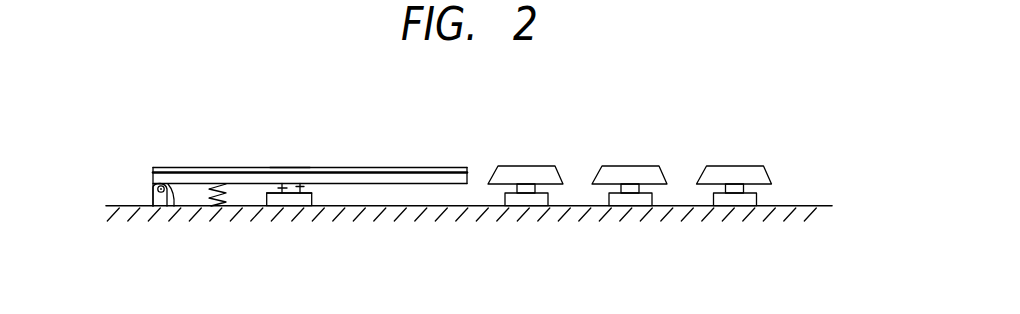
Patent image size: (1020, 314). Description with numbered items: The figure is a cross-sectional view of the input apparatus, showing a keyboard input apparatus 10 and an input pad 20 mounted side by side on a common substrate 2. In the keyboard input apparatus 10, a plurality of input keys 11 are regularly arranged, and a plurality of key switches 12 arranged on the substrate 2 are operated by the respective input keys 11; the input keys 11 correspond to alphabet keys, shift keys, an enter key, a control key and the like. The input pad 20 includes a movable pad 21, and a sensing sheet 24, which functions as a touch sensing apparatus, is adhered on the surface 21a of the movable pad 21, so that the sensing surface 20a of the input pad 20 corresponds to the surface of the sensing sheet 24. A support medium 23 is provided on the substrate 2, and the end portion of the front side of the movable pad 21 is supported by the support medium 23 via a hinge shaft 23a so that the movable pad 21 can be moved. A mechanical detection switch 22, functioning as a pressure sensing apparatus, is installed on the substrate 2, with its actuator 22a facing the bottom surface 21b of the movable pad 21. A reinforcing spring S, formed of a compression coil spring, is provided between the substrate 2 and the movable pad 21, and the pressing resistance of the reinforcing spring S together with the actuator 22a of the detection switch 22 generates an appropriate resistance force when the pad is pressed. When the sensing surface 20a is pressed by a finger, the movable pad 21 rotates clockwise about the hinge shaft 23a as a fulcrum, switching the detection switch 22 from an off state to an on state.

The substrate 2 is at (807, 205).
The keyboard input apparatus 10 is at (493, 101).
The input key 11 is at (540, 169).
The key switch 12 is at (523, 202).
The input pad 20 is at (189, 157).
The sensing surface 20a is at (375, 174).
The movable pad 21 is at (310, 186).
The surface of the movable pad 21a is at (452, 167).
The bottom surface of the movable pad 21b is at (405, 184).
The mechanical detection switch 22 is at (286, 237).
The actuator 22a is at (267, 193).
The support medium 23 is at (152, 240).
The hinge shaft 23a is at (152, 192).
The sensing sheet 24 is at (290, 167).
The reinforcing spring S is at (227, 194).